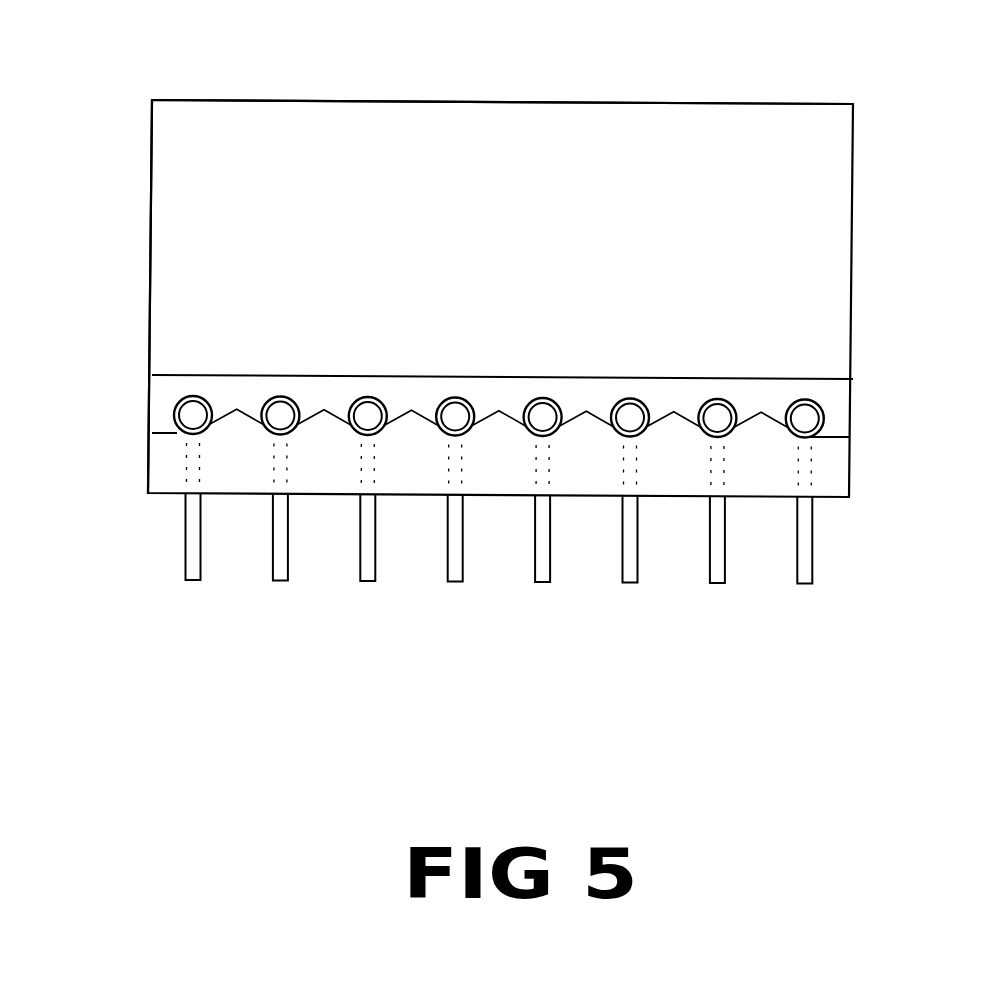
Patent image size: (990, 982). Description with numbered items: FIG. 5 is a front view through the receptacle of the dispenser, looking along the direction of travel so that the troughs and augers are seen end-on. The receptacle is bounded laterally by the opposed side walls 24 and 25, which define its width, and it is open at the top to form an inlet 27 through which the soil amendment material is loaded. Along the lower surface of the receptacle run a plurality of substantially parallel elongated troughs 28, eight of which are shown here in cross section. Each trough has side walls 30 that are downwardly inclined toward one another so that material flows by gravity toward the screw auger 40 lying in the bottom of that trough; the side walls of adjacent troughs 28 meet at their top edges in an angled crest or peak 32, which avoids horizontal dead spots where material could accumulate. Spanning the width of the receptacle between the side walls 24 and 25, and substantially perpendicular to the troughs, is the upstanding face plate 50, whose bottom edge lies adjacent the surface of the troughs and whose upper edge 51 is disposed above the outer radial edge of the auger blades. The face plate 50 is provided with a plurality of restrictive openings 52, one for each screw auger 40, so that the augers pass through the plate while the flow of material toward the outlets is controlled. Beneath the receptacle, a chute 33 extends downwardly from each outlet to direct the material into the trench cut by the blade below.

The side wall 24 is at (853, 247).
The side wall 25 is at (152, 196).
The inlet 27 is at (442, 102).
The elongated trough 28 is at (405, 398).
The trough side walls 30 is at (667, 410).
The angled crest or peak 32 is at (247, 398).
The chute 33 is at (185, 533).
The screw auger 40 is at (285, 398).
The face plate 50 is at (495, 392).
The upper edge 51 is at (752, 380).
The restrictive opening 52 is at (190, 396).